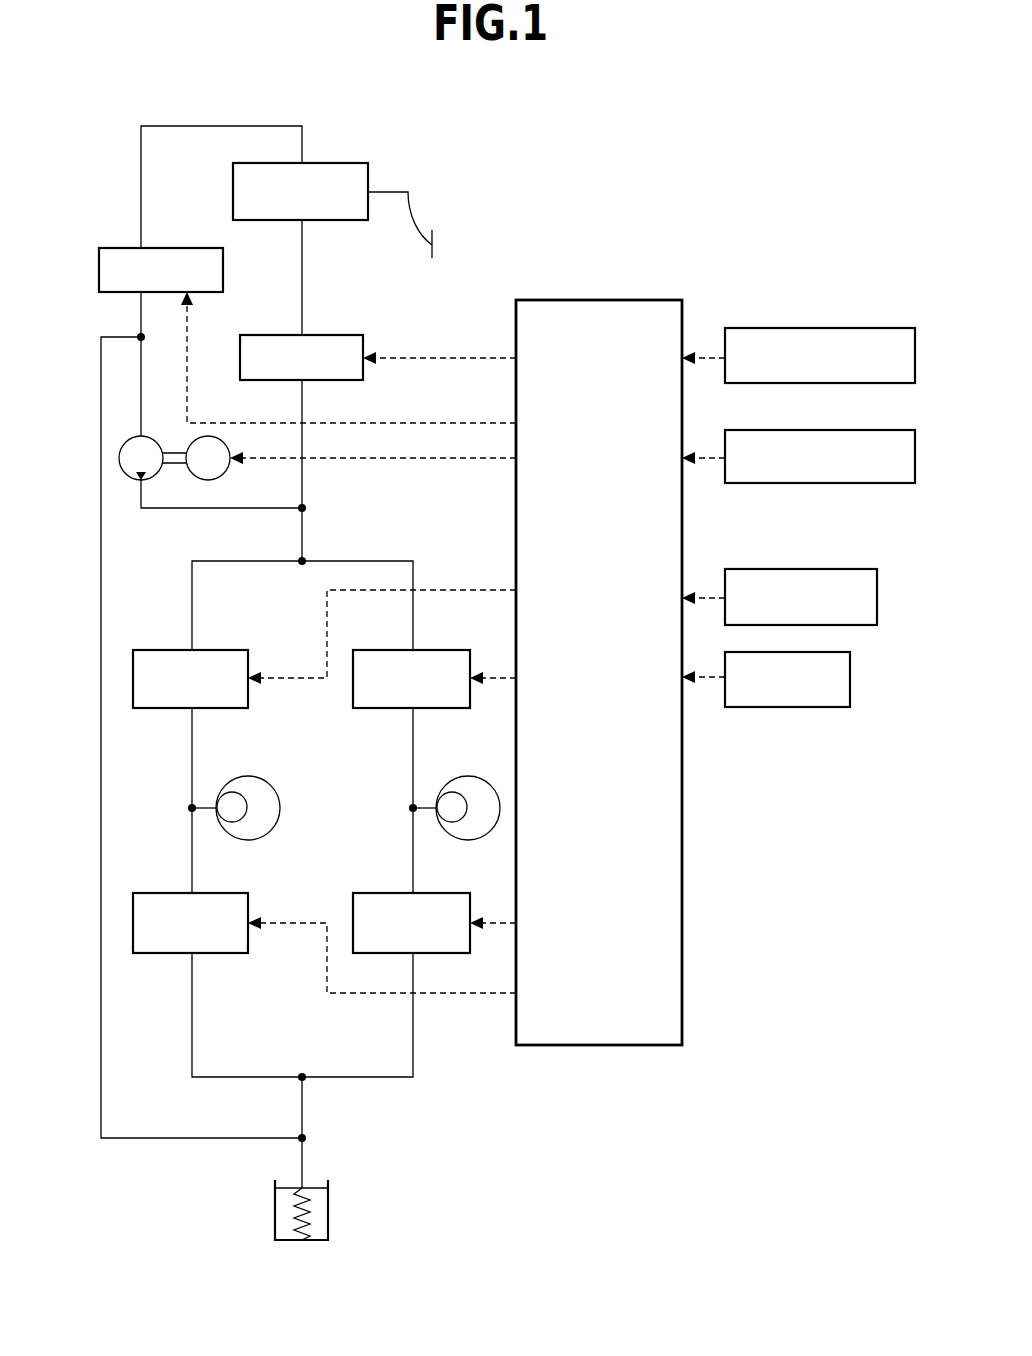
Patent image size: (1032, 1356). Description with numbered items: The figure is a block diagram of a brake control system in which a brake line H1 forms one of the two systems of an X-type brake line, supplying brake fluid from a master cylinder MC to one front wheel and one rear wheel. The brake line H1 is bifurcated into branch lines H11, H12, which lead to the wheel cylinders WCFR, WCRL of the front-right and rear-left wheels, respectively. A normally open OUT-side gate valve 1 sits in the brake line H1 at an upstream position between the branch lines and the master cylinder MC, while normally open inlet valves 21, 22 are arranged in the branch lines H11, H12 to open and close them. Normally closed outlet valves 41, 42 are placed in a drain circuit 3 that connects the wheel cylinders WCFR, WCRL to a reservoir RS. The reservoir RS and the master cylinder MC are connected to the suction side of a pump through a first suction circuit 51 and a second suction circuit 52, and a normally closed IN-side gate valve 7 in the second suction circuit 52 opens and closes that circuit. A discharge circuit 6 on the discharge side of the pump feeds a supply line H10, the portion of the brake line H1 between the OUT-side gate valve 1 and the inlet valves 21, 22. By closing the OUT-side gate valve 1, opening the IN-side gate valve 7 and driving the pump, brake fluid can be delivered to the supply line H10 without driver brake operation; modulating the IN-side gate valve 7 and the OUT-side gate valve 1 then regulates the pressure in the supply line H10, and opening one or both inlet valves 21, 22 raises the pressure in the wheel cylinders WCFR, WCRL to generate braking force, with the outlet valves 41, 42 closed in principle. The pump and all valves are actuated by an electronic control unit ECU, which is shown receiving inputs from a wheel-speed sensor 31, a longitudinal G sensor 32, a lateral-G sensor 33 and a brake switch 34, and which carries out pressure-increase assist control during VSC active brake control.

The master cylinder MC is at (342, 163).
The second suction circuit 52 is at (141, 188).
The IN-side gate valve 7 is at (195, 248).
The brake line H1 is at (302, 273).
The OUT-side gate valve 1 is at (342, 335).
The supply line H10 is at (322, 529).
The discharge circuit 6 is at (240, 508).
The branch line H11 is at (252, 561).
The branch line H12 is at (370, 561).
The inlet valve 21 is at (222, 650).
The inlet valve 22 is at (440, 650).
The wheel cylinder WCFR is at (268, 785).
The wheel cylinder WCRL is at (470, 776).
The outlet valve 41 is at (225, 893).
The outlet valve 42 is at (443, 893).
The drain circuit 3 is at (302, 1107).
The first suction circuit 51 is at (190, 1138).
The reservoir RS is at (328, 1200).
The electronic control unit ECU is at (636, 300).
The wheel-speed sensor 31 is at (858, 328).
The longitudinal G sensor 32 is at (858, 430).
The lateral-G sensor 33 is at (813, 569).
The brake switch 34 is at (792, 707).